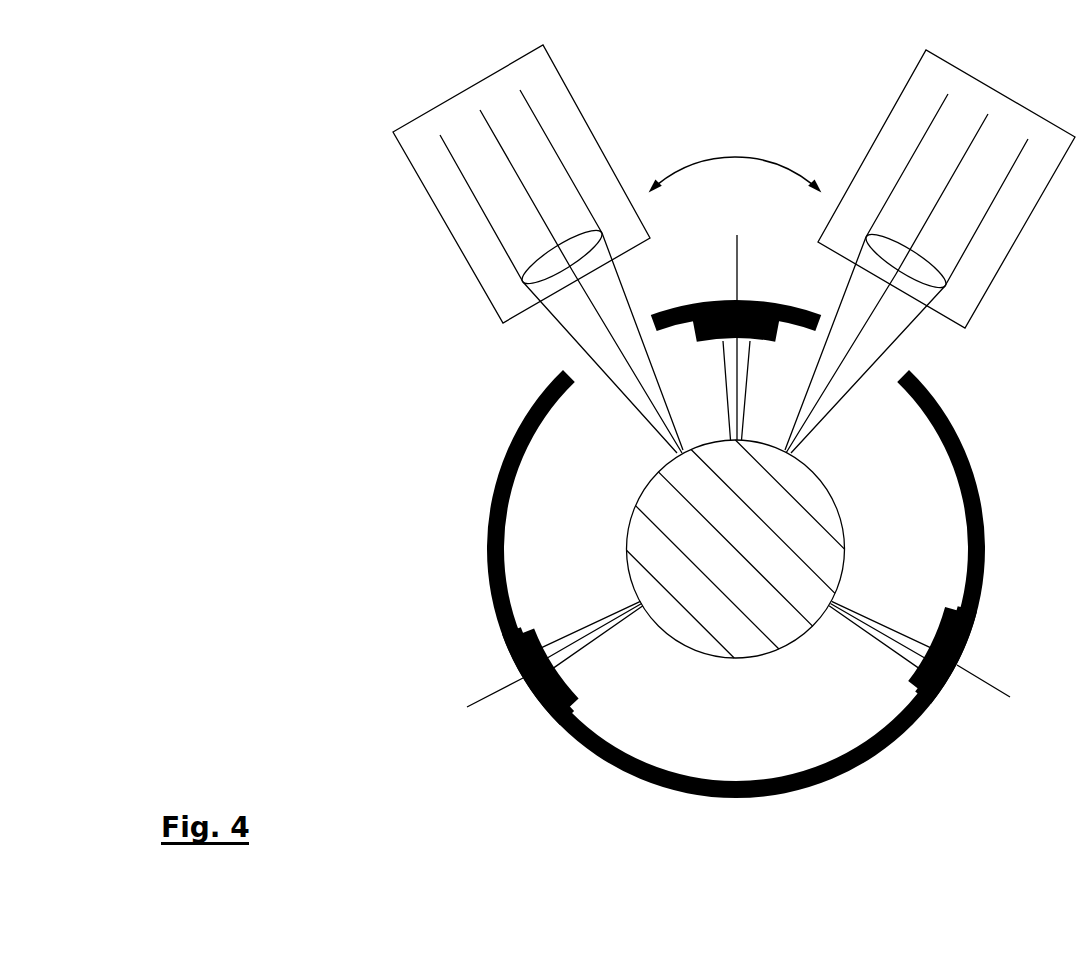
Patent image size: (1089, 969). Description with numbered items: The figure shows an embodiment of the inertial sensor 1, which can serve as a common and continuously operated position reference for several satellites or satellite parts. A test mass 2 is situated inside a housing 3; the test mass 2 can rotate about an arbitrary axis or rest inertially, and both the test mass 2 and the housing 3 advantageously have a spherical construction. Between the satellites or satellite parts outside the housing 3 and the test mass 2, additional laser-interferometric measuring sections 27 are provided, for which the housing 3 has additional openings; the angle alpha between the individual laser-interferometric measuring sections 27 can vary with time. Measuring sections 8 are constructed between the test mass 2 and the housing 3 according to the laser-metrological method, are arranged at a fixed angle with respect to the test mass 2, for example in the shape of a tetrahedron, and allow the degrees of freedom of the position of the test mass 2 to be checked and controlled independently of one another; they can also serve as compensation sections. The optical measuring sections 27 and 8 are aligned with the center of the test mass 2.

The inertial sensor 1 is at (352, 310).
The test mass 2 is at (845, 548).
The housing 3 is at (952, 423).
The measuring sections 8 is at (742, 383).
The laser-interferometric measuring sections 27 is at (867, 145).